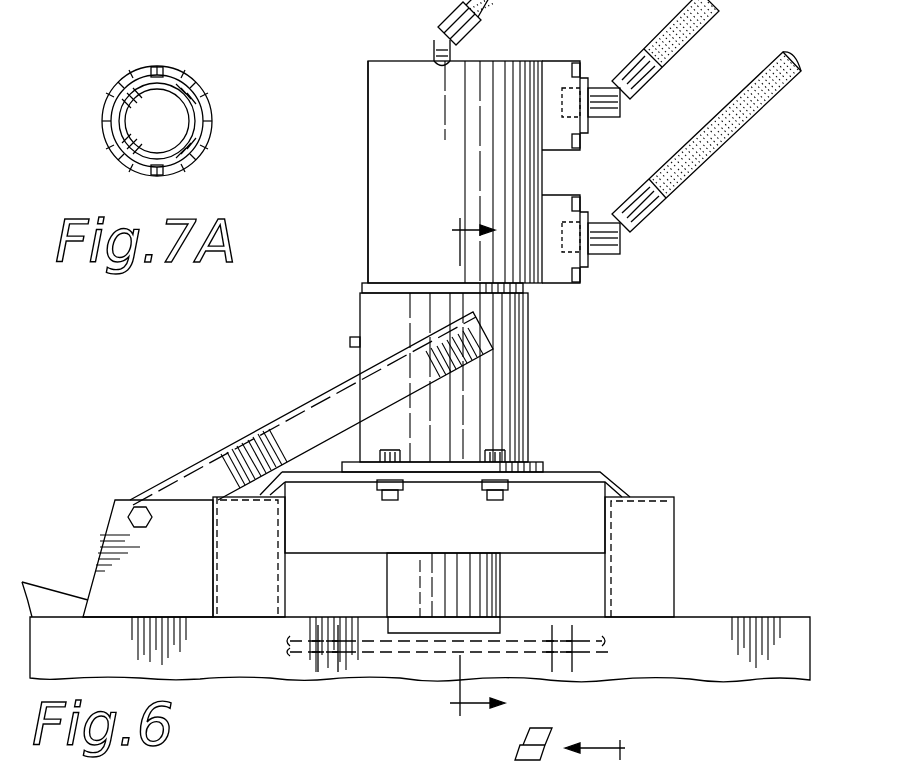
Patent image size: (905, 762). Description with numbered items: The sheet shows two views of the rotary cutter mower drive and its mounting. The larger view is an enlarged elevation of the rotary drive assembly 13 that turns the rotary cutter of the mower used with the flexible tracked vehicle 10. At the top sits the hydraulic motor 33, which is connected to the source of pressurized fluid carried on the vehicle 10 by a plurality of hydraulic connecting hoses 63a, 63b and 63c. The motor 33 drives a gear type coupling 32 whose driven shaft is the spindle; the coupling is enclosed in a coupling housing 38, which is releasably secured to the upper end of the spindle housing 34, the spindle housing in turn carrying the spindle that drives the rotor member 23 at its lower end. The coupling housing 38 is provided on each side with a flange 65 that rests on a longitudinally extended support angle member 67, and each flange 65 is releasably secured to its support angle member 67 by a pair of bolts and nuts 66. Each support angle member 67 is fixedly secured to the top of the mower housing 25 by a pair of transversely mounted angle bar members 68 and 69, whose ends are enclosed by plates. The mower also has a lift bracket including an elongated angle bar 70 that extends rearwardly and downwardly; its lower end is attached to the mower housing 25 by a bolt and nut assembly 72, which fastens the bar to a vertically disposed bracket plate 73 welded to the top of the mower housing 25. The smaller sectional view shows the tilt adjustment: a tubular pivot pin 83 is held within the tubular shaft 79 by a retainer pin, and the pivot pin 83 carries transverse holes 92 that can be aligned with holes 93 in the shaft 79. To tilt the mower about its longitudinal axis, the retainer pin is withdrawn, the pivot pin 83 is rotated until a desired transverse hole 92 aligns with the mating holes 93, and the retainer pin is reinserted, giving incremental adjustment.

In FIG. 6, the flexible tracked vehicle 10 is at (450, 474).
In FIG. 6, the rotary drive assembly 13 is at (368, 190).
In FIG. 6, the rotor member 23 is at (528, 645).
In FIG. 6, the mower housing 25 is at (702, 630).
In FIG. 6, the gear type coupling 32 is at (358, 328).
In FIG. 6, the hydraulic motor 33 is at (392, 140).
In FIG. 6, the spindle housing 34 is at (485, 592).
In FIG. 6, the coupling housing 38 is at (366, 311).
In FIG. 6, the hydraulic connecting hose 63a is at (490, 6).
In FIG. 6, the hydraulic connecting hose 63b is at (690, 30).
In FIG. 6, the hydraulic connecting hose 63c is at (757, 98).
In FIG. 6, the flange 65 is at (547, 465).
In FIG. 6, the bolts and nuts 66 is at (390, 455).
In FIG. 6, the support angle member 67 is at (586, 493).
In FIG. 6, the transverse angle bar member 68 is at (253, 605).
In FIG. 6, the transverse angle bar member 69 is at (668, 548).
In FIG. 6, the elongated angle bar 70 is at (201, 465).
In FIG. 6, the bolt and nut assembly 72 is at (133, 508).
In FIG. 6, the bracket plate 73 is at (100, 565).
In FIG. 7A, the tubular shaft 79 is at (206, 106).
In FIG. 7A, the tubular pivot pin 83 is at (192, 121).
In FIG. 7A, the transverse hole 92 is at (142, 80).
In FIG. 7A, the hole 93 is at (159, 70).